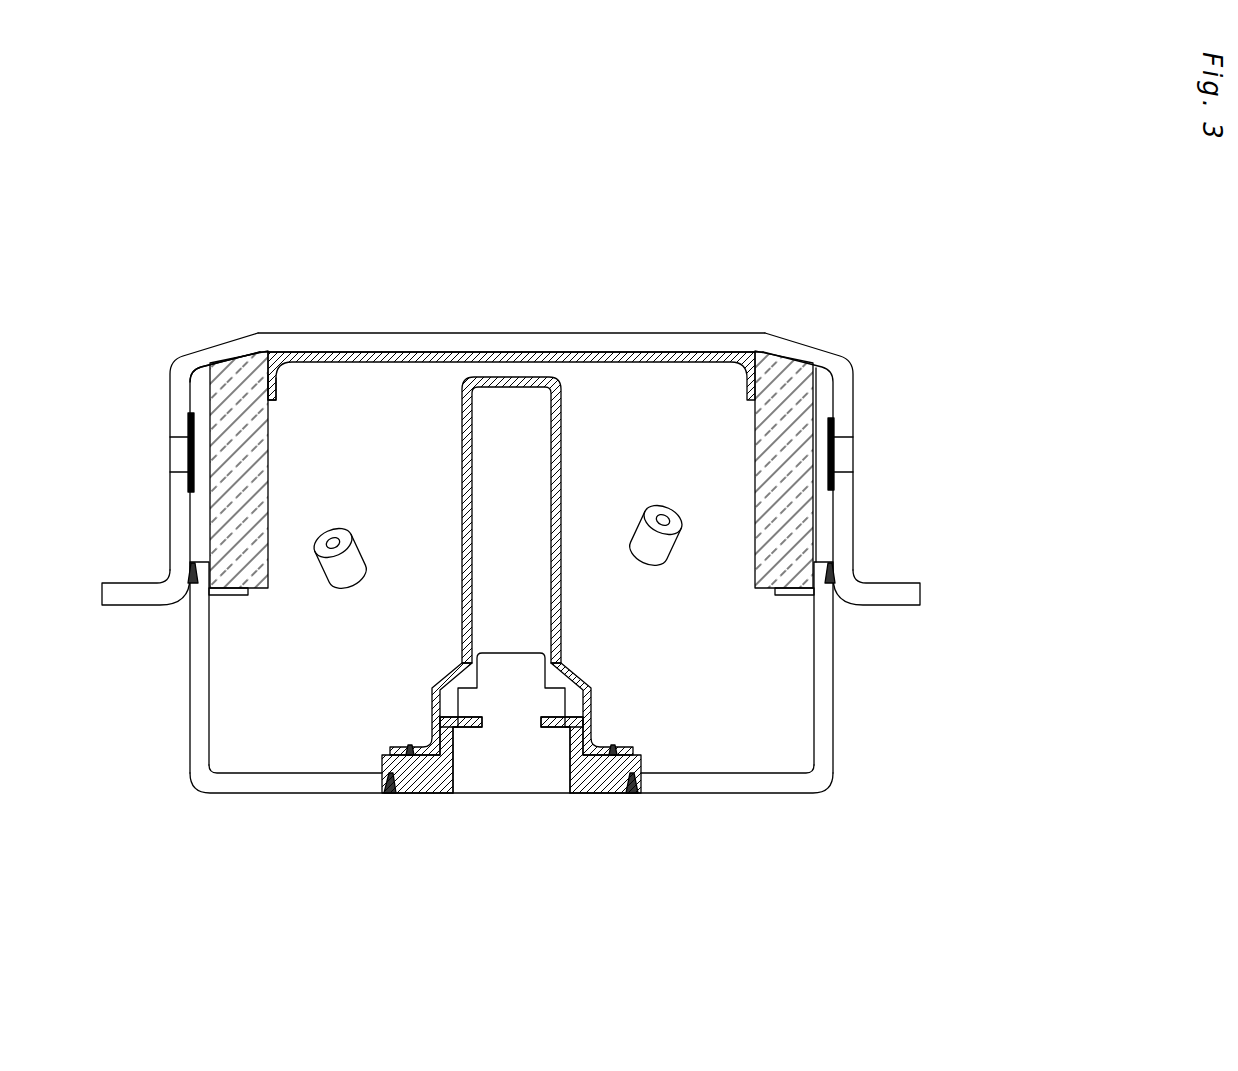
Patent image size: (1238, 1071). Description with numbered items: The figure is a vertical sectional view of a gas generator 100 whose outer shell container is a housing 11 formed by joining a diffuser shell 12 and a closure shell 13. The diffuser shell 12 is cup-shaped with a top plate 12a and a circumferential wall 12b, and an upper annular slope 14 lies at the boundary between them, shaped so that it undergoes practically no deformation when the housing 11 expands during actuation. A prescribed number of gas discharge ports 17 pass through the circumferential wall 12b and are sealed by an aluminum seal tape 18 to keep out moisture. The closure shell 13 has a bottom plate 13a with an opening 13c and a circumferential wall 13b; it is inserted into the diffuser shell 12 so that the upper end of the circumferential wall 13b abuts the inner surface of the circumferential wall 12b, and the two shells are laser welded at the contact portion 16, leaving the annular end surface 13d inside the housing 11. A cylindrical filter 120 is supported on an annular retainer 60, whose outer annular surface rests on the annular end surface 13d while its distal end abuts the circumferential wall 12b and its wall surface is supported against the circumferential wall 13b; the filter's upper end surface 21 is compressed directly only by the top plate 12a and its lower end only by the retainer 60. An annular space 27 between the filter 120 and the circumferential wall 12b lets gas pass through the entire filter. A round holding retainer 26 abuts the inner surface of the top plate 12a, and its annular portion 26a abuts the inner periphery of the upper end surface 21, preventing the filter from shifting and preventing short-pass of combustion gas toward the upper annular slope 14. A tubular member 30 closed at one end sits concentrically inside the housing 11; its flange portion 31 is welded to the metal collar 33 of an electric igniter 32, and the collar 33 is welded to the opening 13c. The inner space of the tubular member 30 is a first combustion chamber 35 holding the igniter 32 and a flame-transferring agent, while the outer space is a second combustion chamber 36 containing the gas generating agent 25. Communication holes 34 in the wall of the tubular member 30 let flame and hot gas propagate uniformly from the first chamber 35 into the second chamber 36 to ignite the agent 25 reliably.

The gas generator 100 is at (613, 265).
The housing 11 is at (558, 520).
The diffuser shell 12 is at (566, 405).
The top plate 12a is at (735, 333).
The circumferential wall 12b is at (564, 455).
The closure shell 13 is at (503, 701).
The bottom plate 13a is at (748, 780).
The circumferential wall 13b is at (822, 735).
The opening 13c is at (388, 792).
The annular end surface 13d is at (200, 562).
The upper annular slope 14 is at (200, 345).
The contact portion 16 is at (834, 589).
The gas discharge ports 17 is at (180, 455).
The aluminum seal tape 18 is at (203, 420).
The upper end surface 21 is at (230, 358).
The gas generating agent 25 is at (355, 555).
The holding retainer 26 is at (511, 334).
The annular portion 26a is at (278, 386).
The annular space 27 is at (818, 508).
The tubular member 30 is at (513, 372).
The flange portion 31 is at (418, 742).
The electric igniter 32 is at (497, 785).
The metal collar 33 is at (425, 782).
The communication holes 34 is at (565, 428).
The first combustion chamber 35 is at (528, 472).
The second combustion chamber 36 is at (705, 472).
The annular retainer 60 is at (780, 600).
The cylindrical filter 120 is at (245, 362).